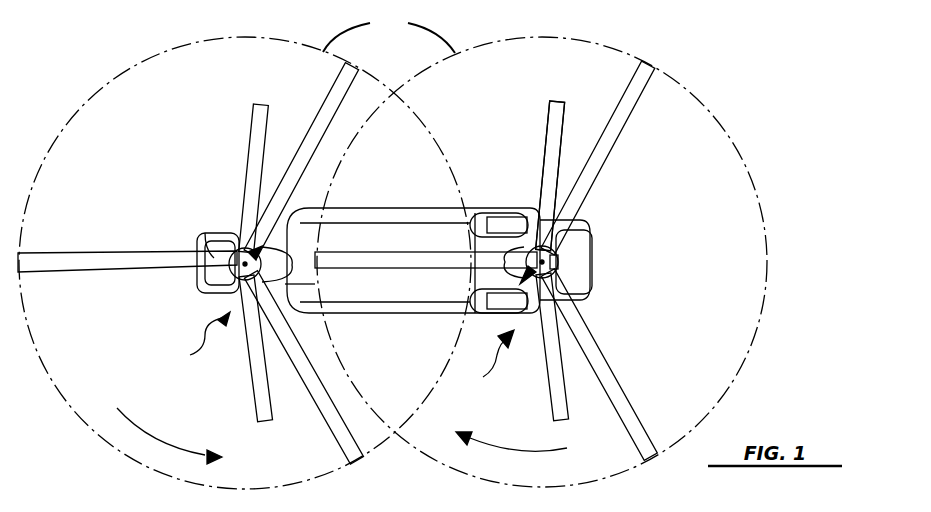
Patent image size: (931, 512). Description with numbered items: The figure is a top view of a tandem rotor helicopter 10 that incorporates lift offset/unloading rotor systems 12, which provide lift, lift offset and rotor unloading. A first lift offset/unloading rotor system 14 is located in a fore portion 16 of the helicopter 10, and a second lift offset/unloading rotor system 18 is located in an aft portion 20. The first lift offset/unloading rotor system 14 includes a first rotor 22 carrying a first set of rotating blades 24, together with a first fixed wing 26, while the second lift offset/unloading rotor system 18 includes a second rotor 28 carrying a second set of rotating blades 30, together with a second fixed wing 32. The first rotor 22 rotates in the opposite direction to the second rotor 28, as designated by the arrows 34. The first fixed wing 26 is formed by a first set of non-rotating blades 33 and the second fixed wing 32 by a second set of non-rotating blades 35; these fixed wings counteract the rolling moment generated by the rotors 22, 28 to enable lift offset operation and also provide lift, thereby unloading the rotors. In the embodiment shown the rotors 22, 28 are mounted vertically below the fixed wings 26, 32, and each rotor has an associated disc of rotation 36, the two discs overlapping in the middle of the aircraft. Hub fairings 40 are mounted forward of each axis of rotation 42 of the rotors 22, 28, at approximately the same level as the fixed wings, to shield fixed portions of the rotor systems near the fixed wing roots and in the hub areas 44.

The tandem rotor helicopter 10 is at (368, 210).
The lift offset/unloading rotor systems 12 is at (214, 235).
The first lift offset/unloading rotor system 14 is at (232, 300).
The fore portion 16 is at (202, 347).
The second lift offset/unloading rotor system 18 is at (565, 266).
The aft portion 20 is at (490, 366).
The first rotor 22 is at (200, 282).
The first set of rotating blades 24 is at (320, 104).
The first fixed wing 26 is at (270, 422).
The second rotor 28 is at (588, 300).
The second set of rotating blades 30 is at (638, 100).
The second fixed wing 32 is at (560, 102).
The first set of non-rotating blades 33 is at (252, 120).
The arrows 34 is at (128, 416).
The second set of non-rotating blades 35 is at (548, 126).
The discs of rotation 36 is at (389, 31).
The hub fairings 40 is at (207, 236).
The axis of rotation 42 is at (290, 284).
The hub areas 44 is at (268, 248).